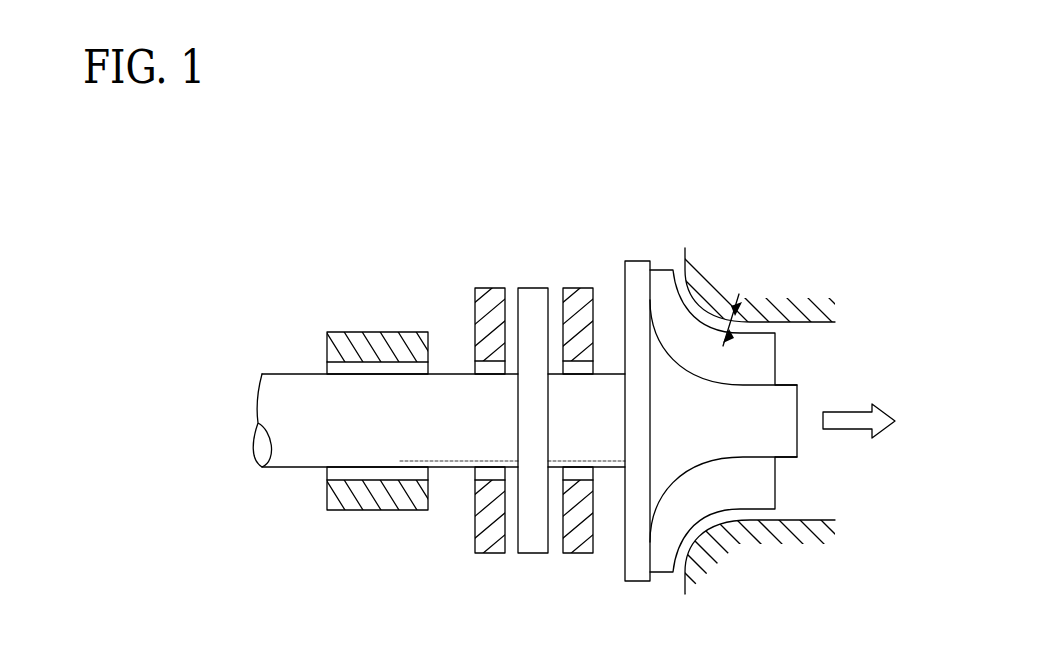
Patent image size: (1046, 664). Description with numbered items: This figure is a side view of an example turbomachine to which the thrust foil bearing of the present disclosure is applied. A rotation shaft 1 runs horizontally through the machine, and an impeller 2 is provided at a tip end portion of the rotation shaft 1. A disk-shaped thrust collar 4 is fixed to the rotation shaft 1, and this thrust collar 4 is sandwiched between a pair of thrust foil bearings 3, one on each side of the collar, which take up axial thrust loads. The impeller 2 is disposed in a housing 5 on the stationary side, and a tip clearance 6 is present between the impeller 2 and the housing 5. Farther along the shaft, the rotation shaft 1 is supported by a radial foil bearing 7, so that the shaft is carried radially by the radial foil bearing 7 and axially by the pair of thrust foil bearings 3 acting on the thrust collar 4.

The rotation shaft 1 is at (290, 382).
The impeller 2 is at (678, 323).
The thrust foil bearing 3 is at (489, 301).
The thrust collar 4 is at (536, 303).
The housing 5 is at (714, 290).
The tip clearance 6 is at (747, 324).
The radial foil bearing 7 is at (380, 348).